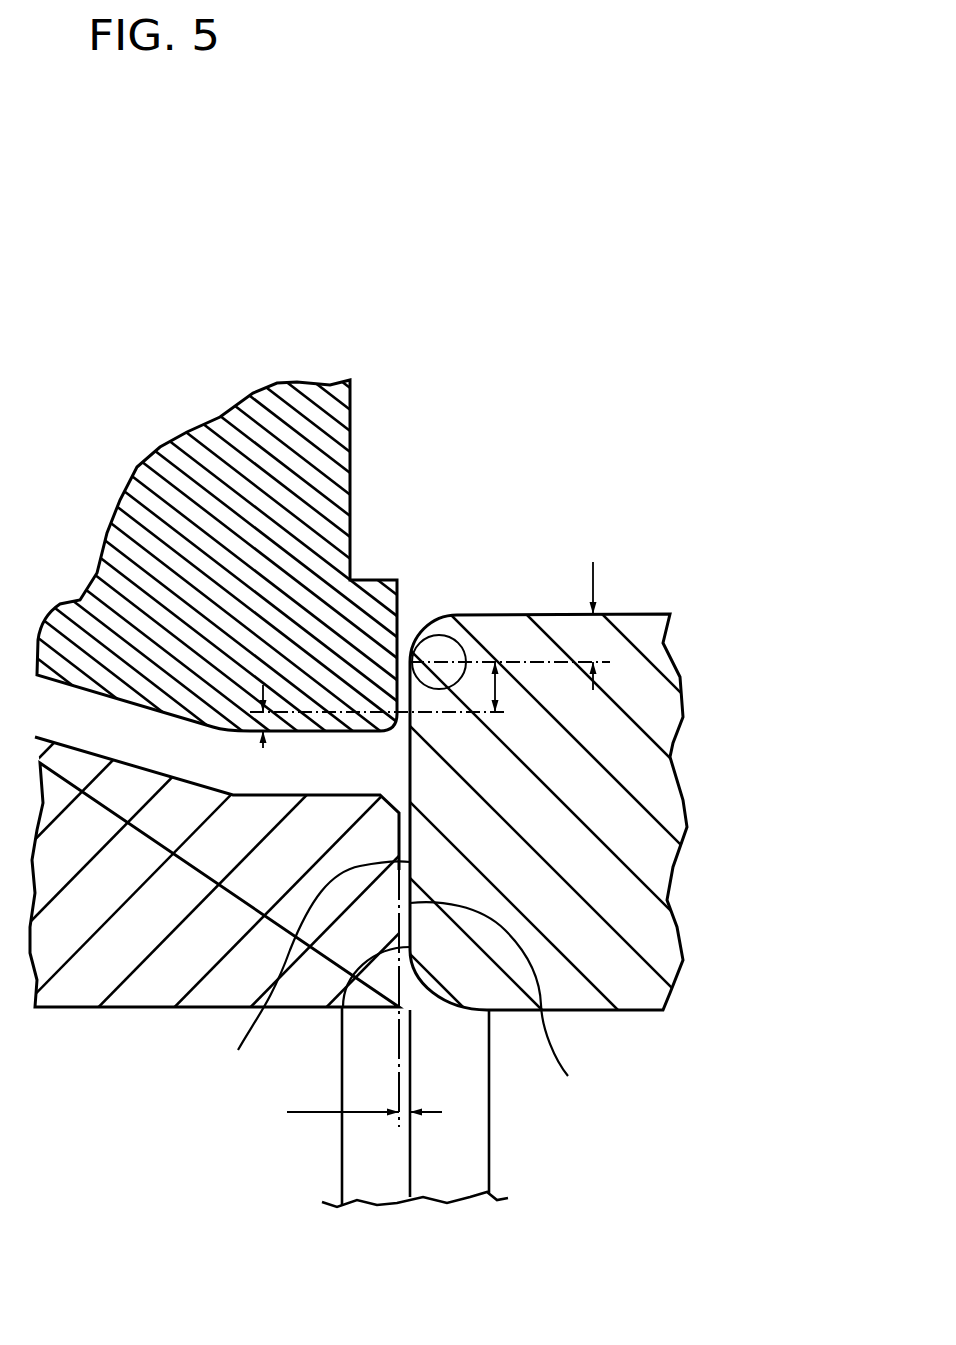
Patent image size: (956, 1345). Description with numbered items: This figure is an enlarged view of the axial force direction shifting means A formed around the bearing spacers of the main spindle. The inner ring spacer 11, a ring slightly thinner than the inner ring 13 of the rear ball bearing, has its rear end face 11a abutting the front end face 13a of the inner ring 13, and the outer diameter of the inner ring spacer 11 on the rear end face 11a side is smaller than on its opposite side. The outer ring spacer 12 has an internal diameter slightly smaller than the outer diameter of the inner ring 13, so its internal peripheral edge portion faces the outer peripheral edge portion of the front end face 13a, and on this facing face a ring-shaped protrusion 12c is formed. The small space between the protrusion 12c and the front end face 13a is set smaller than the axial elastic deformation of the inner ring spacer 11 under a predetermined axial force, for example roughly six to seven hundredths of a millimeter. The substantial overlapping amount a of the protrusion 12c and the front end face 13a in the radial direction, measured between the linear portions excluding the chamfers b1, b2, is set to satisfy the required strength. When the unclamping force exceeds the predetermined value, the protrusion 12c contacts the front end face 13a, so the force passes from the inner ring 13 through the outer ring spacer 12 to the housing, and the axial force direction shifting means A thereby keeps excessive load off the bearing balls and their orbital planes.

The inner ring spacer 11 is at (122, 1008).
The rear end face 11a is at (511, 1013).
The outer ring spacer 12 is at (353, 431).
The protrusion 12c is at (443, 635).
The inner ring 13 is at (652, 607).
The front end face 13a is at (305, 980).
The substantial overlapping amount a is at (520, 658).
The chamfer b1 is at (253, 730).
The chamfer b2 is at (627, 610).
The axial force direction shifting means A is at (265, 1190).